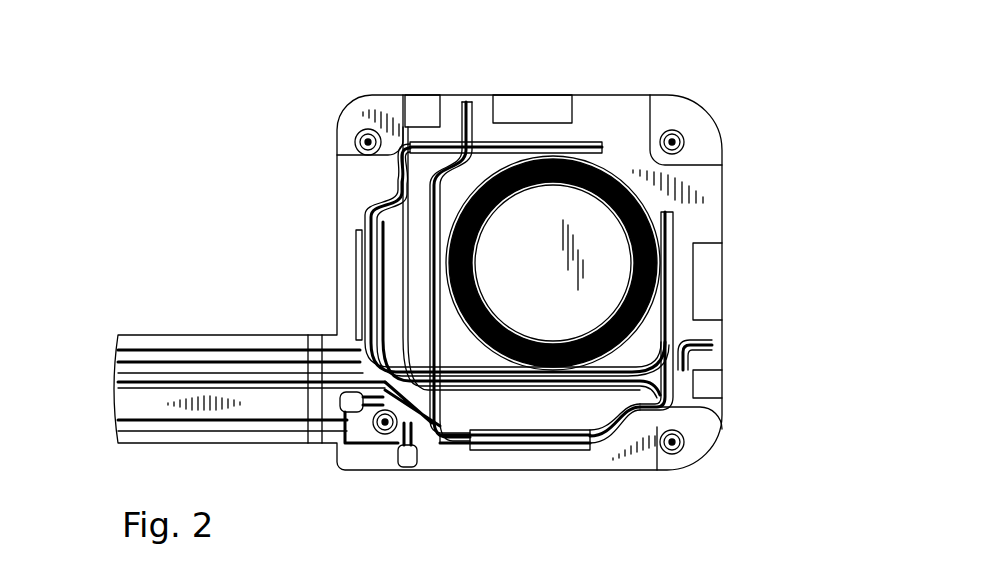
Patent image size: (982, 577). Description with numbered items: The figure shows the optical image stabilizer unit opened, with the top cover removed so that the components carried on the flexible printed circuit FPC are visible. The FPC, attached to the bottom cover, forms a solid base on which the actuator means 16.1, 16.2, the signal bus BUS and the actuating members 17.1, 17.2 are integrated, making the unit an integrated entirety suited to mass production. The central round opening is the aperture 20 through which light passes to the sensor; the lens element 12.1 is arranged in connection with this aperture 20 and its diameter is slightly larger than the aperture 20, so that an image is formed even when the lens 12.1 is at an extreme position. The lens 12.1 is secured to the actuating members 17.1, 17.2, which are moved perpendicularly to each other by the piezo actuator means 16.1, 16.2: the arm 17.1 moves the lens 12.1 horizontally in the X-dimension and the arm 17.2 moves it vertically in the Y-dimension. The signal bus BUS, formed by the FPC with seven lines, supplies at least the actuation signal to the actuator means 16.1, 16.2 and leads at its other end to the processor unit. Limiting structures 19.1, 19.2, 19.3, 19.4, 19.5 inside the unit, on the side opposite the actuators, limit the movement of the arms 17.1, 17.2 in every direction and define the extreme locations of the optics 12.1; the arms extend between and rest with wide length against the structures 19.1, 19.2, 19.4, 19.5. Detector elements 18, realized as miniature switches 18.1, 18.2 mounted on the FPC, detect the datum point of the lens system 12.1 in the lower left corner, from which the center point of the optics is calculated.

The lens element 12.1 is at (558, 268).
The actuator means 16.1 is at (515, 450).
The actuator means 16.2 is at (360, 263).
The actuating member 17.1 is at (668, 323).
The actuating member 17.2 is at (585, 148).
The detector elements 18 is at (371, 486).
The miniature switch 18.1 is at (407, 460).
The miniature switch 18.2 is at (345, 400).
The limiting structure 19.1 is at (426, 95).
The limiting structure 19.2 is at (517, 96).
The limiting structure 19.3 is at (683, 108).
The limiting structure 19.4 is at (705, 273).
The limiting structure 19.5 is at (710, 385).
The aperture 20 is at (636, 208).
The signal bus BUS is at (203, 326).
The flexible printed circuit FPC is at (700, 437).